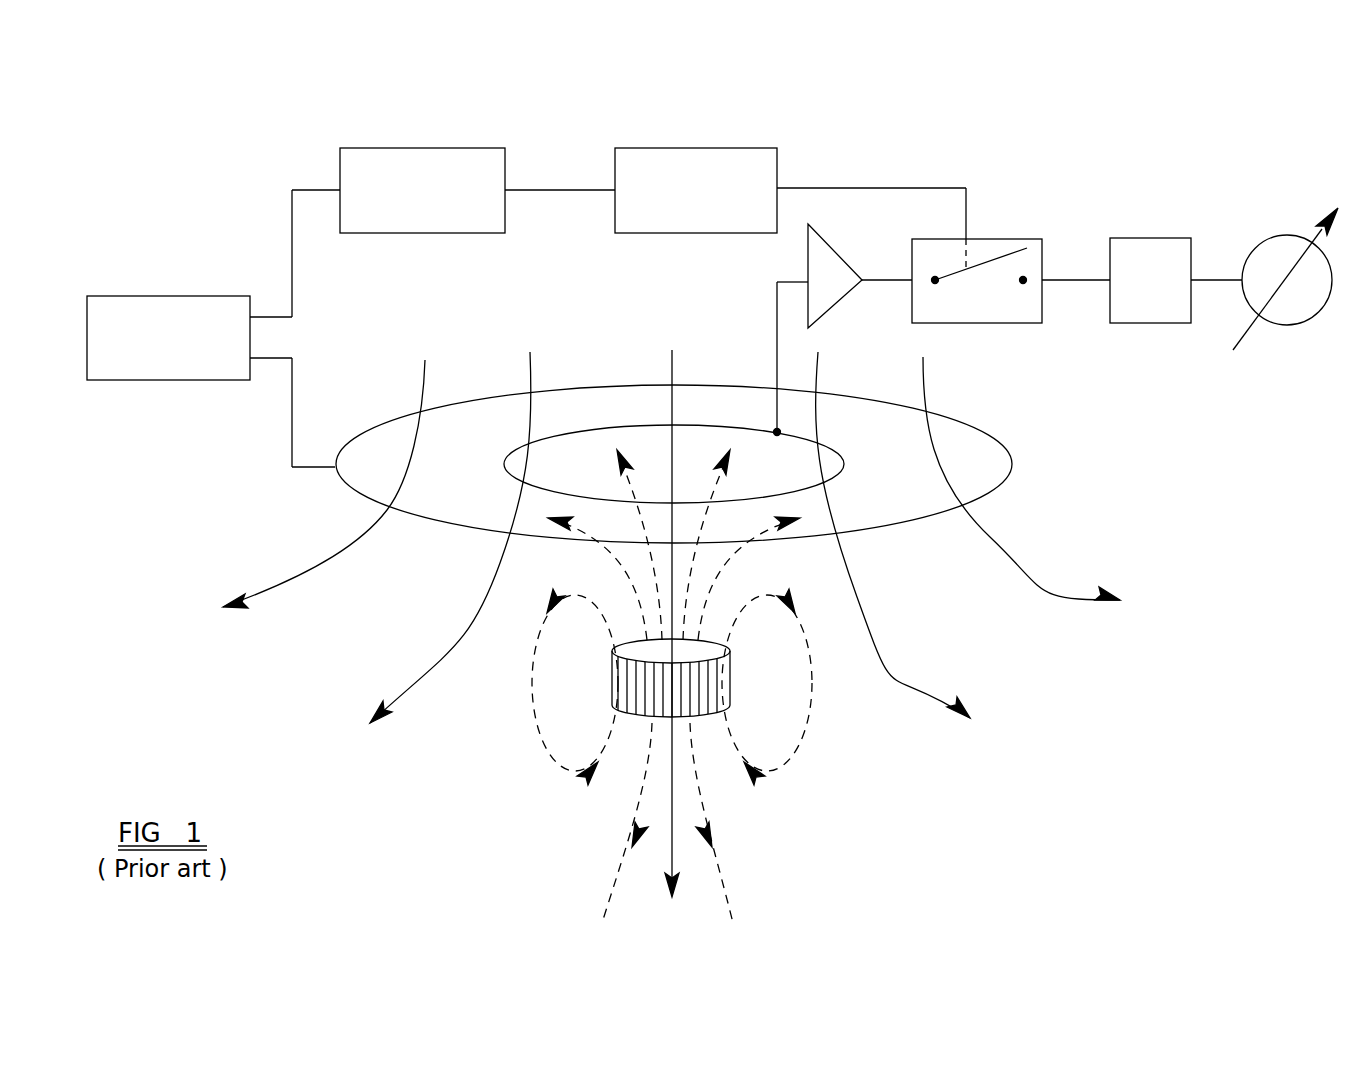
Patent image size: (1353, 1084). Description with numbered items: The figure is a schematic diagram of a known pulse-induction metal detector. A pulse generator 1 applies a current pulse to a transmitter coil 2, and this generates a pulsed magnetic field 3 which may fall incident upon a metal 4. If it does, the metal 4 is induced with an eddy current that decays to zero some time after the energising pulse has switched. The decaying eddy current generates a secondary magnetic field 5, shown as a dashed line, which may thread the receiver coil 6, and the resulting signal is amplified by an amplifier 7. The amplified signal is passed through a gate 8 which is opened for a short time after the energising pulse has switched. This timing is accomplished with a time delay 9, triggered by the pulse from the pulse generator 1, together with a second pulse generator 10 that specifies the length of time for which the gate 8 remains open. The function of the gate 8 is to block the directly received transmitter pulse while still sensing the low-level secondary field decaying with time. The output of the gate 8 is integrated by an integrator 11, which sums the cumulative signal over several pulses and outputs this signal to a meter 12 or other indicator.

The pulse generator 1 is at (167, 380).
The transmitter coil 2 is at (365, 437).
The pulsed magnetic field 3 is at (485, 587).
The metal 4 is at (595, 680).
The secondary magnetic field 5 is at (818, 675).
The receiver coil 6 is at (842, 462).
The amplifier 7 is at (808, 268).
The gate 8 is at (1008, 239).
The time delay 9 is at (340, 160).
The pulse generator 10 is at (697, 148).
The integrator 11 is at (1152, 238).
The meter 12 is at (1317, 323).